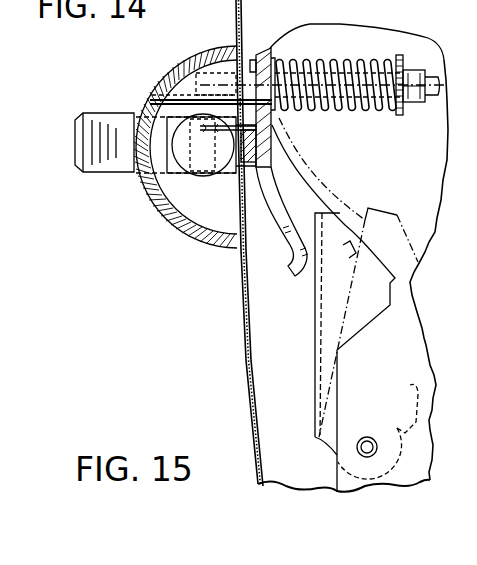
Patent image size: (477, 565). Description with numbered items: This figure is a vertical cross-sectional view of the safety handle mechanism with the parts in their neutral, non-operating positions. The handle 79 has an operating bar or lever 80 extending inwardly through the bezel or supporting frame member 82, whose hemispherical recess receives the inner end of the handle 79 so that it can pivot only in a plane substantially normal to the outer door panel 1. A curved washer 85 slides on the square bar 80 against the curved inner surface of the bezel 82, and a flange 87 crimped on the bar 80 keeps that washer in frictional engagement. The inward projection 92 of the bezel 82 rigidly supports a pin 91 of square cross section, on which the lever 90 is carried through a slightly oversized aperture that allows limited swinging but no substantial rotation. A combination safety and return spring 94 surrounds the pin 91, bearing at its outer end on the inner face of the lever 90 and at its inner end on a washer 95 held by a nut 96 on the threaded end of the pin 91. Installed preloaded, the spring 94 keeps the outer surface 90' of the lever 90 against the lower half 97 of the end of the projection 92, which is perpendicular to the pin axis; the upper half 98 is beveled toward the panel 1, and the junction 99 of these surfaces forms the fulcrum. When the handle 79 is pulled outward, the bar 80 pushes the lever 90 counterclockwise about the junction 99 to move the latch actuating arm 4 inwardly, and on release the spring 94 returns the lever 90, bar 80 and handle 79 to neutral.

The outer panel 1 is at (236, 332).
The arm 4 is at (327, 293).
The handle 79 is at (75, 143).
The operating bar or lever 80 is at (250, 166).
The bezel or supporting frame member 82 is at (173, 69).
The curved washer 85 is at (137, 176).
The flange 87 is at (224, 168).
The lever 90 is at (281, 221).
The outer surface of lever 90' is at (293, 107).
The pin 91 is at (349, 62).
The inward projection 92 is at (252, 70).
The combination safety and return spring 94 is at (349, 108).
The washer 95 is at (400, 115).
The nut 96 is at (412, 64).
The lower half of end of projection 97 is at (216, 84).
The upper half of inner end of projection 98 is at (271, 48).
The junction 99 is at (268, 62).